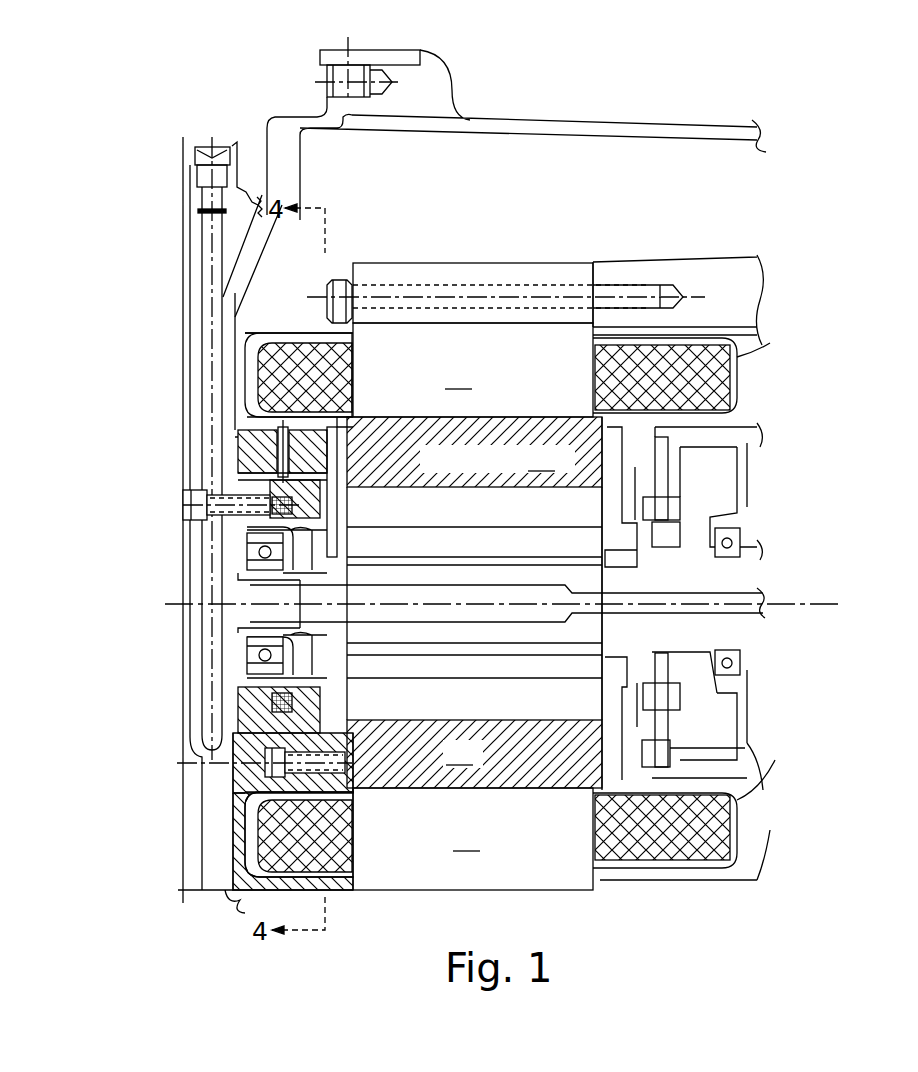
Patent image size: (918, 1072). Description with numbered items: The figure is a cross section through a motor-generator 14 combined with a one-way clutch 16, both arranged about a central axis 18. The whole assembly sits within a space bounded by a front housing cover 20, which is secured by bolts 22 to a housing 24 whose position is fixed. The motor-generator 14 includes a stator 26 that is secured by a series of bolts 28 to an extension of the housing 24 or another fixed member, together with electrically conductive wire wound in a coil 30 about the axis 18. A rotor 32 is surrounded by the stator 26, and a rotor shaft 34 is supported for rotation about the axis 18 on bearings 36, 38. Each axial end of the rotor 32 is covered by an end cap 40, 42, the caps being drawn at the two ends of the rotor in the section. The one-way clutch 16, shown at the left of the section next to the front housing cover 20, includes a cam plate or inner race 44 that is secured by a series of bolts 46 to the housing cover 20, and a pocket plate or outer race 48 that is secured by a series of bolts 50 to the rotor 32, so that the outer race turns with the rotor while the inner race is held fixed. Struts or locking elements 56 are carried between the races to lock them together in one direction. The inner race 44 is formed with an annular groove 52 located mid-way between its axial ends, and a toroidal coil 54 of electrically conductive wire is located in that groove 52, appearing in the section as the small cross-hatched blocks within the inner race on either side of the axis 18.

The motor-generator 14 is at (575, 222).
The one-way clutch 16 is at (125, 647).
The central axis 18 is at (788, 603).
The front housing cover 20 is at (183, 252).
The bolts 22 is at (357, 77).
The housing 24 is at (435, 82).
The stator 26 is at (473, 606).
The bolts 28 is at (423, 297).
The coil 30 is at (712, 372).
The rotor 32 is at (474, 602).
The rotor shaft 34 is at (757, 628).
The bearing 36 is at (260, 557).
The bearing 38 is at (740, 547).
The end cap 40 is at (337, 427).
The end cap 42 is at (620, 462).
The cam plate or inner race 44 is at (250, 450).
The bolts 46 is at (187, 498).
The pocket plate or outer race 48 is at (258, 430).
The bolts 50 is at (257, 775).
The annular groove 52 is at (233, 495).
The toroidal coil 54 is at (257, 527).
The struts or locking elements 56 is at (260, 463).